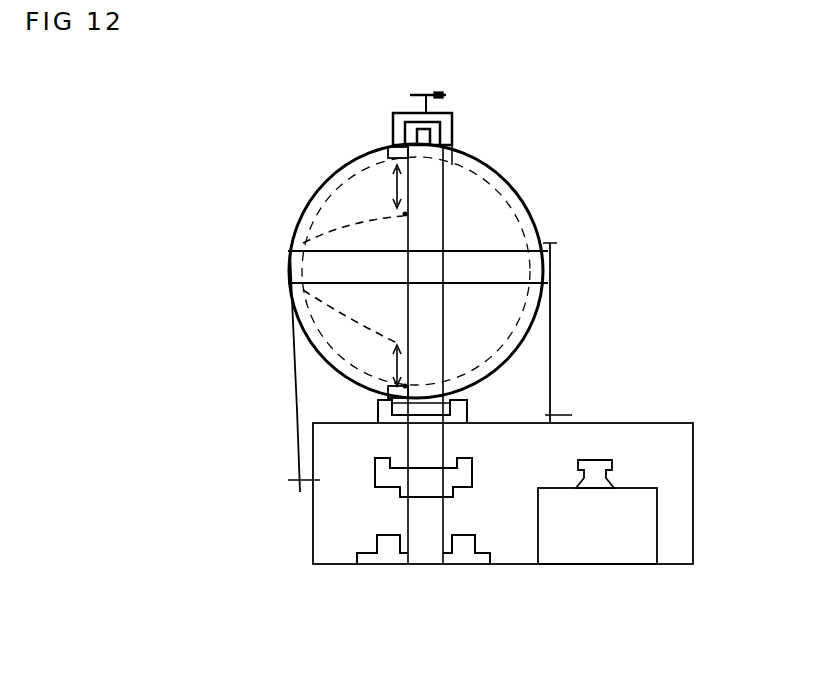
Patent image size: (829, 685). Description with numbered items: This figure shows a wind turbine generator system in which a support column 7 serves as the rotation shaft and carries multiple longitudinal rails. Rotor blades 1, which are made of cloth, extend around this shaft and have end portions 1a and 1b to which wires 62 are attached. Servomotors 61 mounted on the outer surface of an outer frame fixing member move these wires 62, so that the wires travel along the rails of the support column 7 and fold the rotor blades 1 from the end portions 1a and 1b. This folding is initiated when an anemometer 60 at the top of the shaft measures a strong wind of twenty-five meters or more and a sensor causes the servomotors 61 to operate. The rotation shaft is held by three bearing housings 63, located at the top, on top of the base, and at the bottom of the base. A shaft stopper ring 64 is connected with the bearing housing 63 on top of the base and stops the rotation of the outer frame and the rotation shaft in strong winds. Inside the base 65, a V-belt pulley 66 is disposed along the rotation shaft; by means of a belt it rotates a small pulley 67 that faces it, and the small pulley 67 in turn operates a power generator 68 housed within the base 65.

The rotor blade 1 is at (332, 178).
The end portion of rotor blade 1a is at (498, 168).
The end portion of rotor blade 1b is at (405, 388).
The support column 7 is at (443, 222).
The anemometer 60 is at (447, 95).
The servomotor 61 is at (290, 270).
The wire 62 is at (392, 150).
The bearing housing 63 is at (455, 128).
The shaft stopper ring 64 is at (378, 402).
The base 65 is at (695, 500).
The V-belt pulley 66 is at (473, 470).
The small pulley 67 is at (615, 462).
The power generator 68 is at (605, 563).